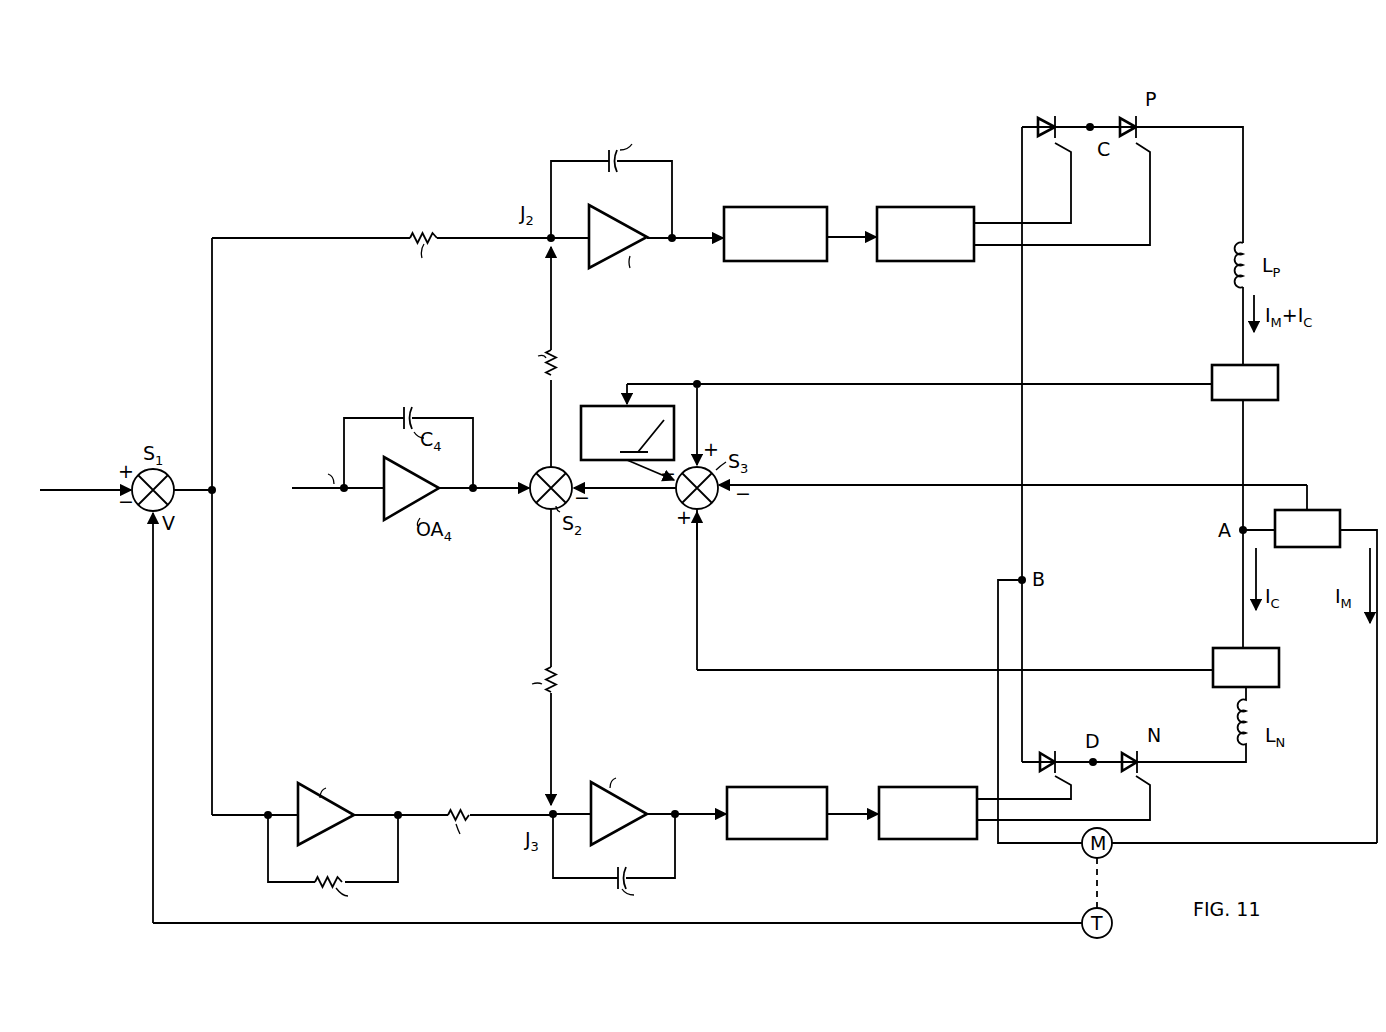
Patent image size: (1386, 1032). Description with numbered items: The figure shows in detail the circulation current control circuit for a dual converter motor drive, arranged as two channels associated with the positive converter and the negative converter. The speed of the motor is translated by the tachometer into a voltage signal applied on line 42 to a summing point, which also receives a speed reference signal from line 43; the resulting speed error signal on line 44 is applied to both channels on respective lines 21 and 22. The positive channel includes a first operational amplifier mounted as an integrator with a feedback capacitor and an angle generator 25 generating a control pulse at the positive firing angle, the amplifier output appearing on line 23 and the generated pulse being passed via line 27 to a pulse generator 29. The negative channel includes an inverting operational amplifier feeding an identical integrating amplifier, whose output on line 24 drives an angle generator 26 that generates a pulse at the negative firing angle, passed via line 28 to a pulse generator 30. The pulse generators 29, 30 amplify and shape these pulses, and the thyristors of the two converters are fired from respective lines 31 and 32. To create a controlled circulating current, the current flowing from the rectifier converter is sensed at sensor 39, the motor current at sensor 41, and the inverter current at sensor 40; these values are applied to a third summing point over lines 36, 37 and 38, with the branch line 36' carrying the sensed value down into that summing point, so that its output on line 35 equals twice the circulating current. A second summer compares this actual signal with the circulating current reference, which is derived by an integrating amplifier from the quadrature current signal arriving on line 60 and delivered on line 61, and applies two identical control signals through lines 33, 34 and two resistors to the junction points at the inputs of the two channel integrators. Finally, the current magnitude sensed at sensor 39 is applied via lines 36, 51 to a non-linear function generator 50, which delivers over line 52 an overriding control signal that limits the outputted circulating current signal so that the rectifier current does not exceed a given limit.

The line 21 is at (326, 240).
The line 22 is at (224, 812).
The amplifier OA2 output 23 is at (708, 242).
The amplifier OA3 output 24 is at (714, 812).
The angle generator 25 is at (774, 206).
The angle generator 26 is at (780, 790).
The firing angle signal alpha P 27 is at (864, 238).
The firing angle signal alpha N 28 is at (866, 816).
The pulse generator 29 is at (926, 210).
The pulse generator 30 is at (956, 786).
The line 31 is at (1010, 222).
The line 32 is at (1036, 798).
The line 33 is at (556, 382).
The line 34 is at (560, 636).
The 2IC signal line 35 is at (652, 492).
The line 36 is at (919, 399).
The sensor output branch line 36' is at (721, 426).
The line 37 is at (928, 482).
The line 38 is at (922, 666).
The current sensor 39 is at (1272, 366).
The current sensor 40 is at (1272, 647).
The current sensor 41 is at (1325, 510).
The line 42 is at (918, 920).
The line 43 is at (84, 494).
The line 44 is at (211, 494).
The non-linear function generator 50 is at (604, 394).
The line 51 is at (646, 384).
The line 52 is at (636, 472).
The current reference input 60 is at (326, 492).
The amplifier OA4 output line 61 is at (502, 492).